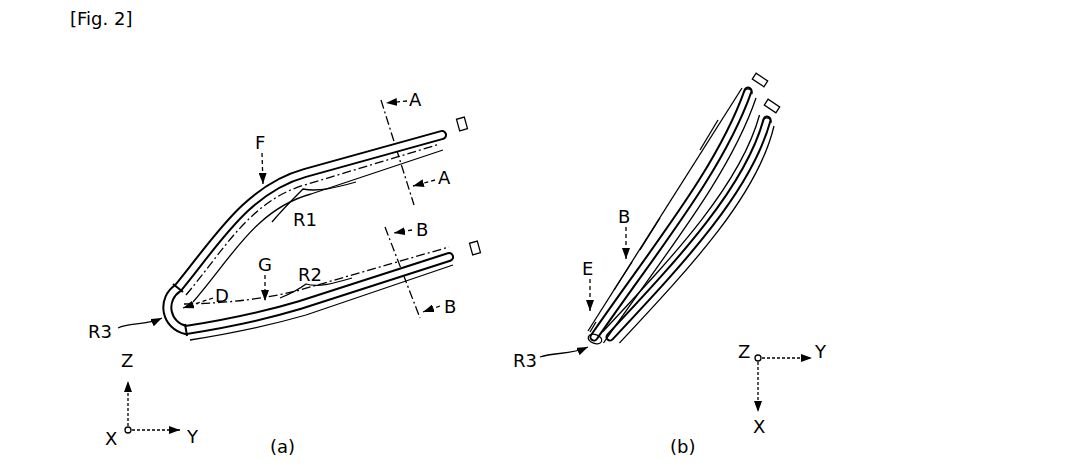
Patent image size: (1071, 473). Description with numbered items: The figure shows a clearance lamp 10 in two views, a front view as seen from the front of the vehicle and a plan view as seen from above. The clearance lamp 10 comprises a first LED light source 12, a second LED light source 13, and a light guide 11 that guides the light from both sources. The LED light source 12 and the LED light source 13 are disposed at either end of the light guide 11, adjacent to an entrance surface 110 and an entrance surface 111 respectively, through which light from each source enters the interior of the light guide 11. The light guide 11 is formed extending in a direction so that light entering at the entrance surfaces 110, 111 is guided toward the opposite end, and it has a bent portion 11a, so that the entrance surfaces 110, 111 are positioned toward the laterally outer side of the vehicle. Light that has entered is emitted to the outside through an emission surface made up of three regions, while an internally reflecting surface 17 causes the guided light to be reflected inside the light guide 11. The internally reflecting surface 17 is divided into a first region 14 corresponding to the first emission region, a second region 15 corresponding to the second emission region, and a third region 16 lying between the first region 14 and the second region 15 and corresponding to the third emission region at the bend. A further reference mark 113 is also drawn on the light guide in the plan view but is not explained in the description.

The clearance lamp 10 is at (209, 223).
The light guide 11 is at (313, 167).
The bent portion 11a is at (158, 287).
The entrance surface 110 is at (444, 127).
The entrance surface 111 is at (453, 248).
The LED light source 12 is at (470, 120).
The LED light source 13 is at (482, 246).
The first region 14 is at (624, 286).
The second region 15 is at (690, 224).
The third region 16 is at (588, 331).
The internally reflecting surface 17 is at (607, 213).
The intermediate portion 113 is at (622, 283).